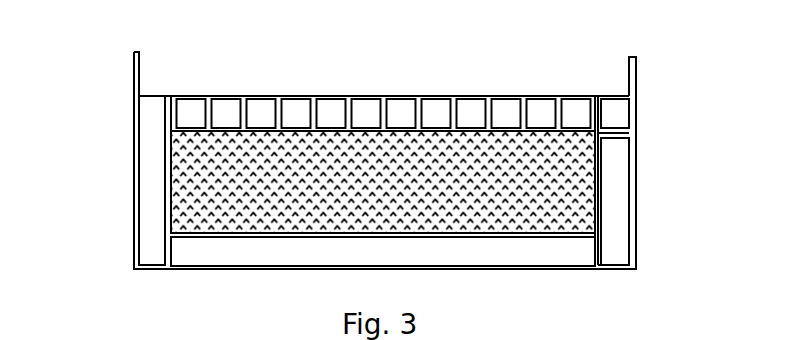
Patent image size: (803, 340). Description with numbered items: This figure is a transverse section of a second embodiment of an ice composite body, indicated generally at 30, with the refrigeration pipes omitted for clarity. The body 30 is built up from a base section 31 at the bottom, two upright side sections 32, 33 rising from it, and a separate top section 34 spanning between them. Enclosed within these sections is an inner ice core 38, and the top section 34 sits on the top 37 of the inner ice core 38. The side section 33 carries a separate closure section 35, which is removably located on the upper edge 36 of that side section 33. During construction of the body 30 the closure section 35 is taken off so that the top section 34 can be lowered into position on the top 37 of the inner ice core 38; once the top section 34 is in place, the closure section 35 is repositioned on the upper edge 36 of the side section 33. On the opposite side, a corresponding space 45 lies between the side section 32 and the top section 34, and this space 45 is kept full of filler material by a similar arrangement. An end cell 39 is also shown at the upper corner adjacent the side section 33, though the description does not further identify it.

The ice composite body 30 is at (111, 99).
The base section 31 is at (182, 269).
The side section 32 is at (134, 189).
The side section 33 is at (634, 196).
The top section 34 is at (289, 96).
The closure section 35 is at (636, 105).
The upper edge 36 is at (630, 133).
The top 37 is at (372, 131).
The inner ice core 38 is at (455, 162).
The end cell 39 is at (595, 97).
The space 45 is at (171, 96).